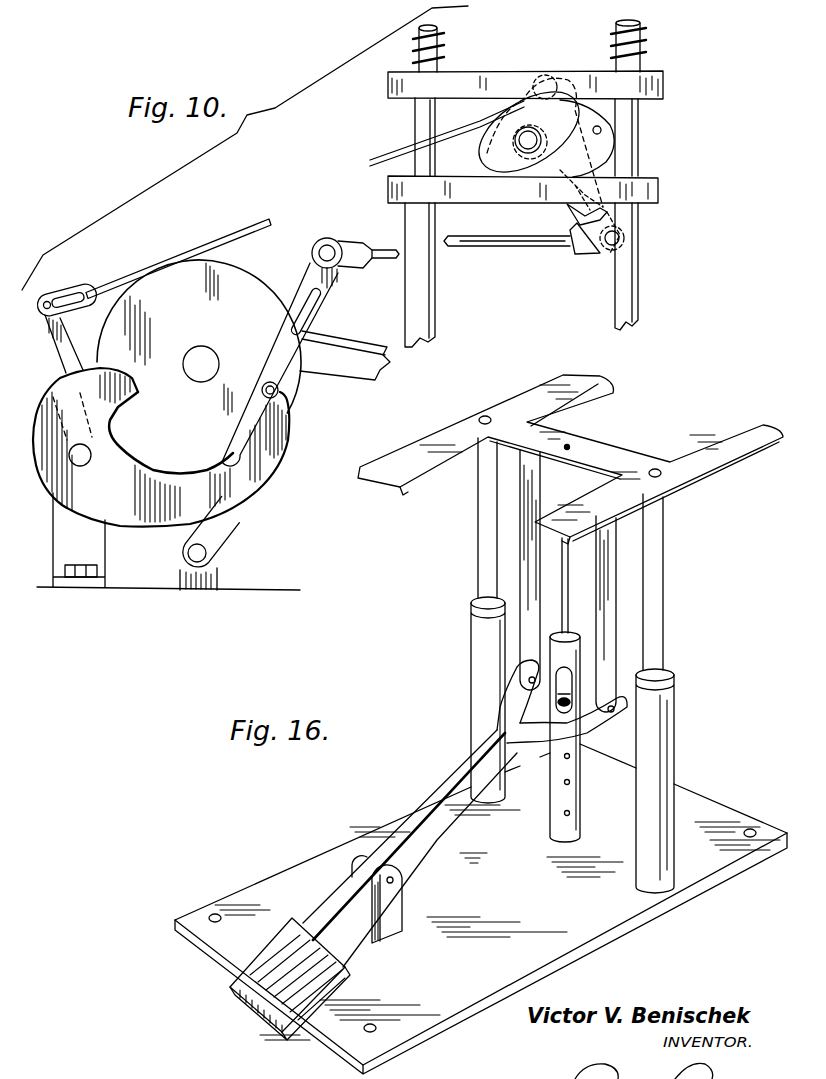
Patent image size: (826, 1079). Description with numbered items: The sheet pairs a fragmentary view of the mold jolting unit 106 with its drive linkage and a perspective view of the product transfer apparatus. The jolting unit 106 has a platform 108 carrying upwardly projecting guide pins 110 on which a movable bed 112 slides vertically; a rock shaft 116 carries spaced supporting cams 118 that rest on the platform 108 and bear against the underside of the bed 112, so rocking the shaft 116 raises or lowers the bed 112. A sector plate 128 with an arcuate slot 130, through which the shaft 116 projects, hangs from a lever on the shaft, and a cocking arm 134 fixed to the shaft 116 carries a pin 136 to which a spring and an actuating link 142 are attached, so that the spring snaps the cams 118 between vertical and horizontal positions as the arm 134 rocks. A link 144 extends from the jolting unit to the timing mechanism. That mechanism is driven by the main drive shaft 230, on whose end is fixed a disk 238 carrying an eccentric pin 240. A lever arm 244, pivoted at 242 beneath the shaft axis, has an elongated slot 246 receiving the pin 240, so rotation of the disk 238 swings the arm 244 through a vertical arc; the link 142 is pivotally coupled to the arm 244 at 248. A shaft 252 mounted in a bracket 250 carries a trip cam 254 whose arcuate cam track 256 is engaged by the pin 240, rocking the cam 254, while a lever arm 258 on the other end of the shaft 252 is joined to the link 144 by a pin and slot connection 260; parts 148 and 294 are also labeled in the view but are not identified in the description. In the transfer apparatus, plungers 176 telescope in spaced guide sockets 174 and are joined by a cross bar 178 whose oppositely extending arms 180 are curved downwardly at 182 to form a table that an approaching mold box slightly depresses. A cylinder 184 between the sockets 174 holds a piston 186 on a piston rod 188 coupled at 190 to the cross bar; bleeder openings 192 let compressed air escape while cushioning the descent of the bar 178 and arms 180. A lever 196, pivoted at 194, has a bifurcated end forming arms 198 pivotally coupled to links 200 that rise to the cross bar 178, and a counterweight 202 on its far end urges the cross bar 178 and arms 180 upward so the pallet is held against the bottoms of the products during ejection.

In FIG. 10, the mold jolting unit 106 is at (531, 183).
In FIG. 10, the platform 108 is at (659, 196).
In FIG. 10, the guide pins 110 is at (415, 118).
In FIG. 10, the movable bed 112 is at (664, 85).
In FIG. 10, the rock shaft 116 is at (515, 144).
In FIG. 10, the supporting cams 118 is at (555, 190).
In FIG. 10, the sector plate 128 is at (616, 146).
In FIG. 10, the arcuate slot 130 is at (597, 122).
In FIG. 10, the cocking arm 134 is at (568, 209).
In FIG. 10, the pin 136 is at (600, 257).
In FIG. 10, the actuating link 142 is at (487, 247).
In FIG. 10, the link 144 is at (397, 159).
In FIG. 10, the compression springs 148 is at (441, 62).
In FIG. 10, the main drive shaft 230 is at (203, 348).
In FIG. 10, the disk 238 is at (242, 287).
In FIG. 10, the eccentrically located pin 240 is at (292, 394).
In FIG. 10, the pivot 242 is at (208, 553).
In FIG. 10, the lever arm 244 is at (234, 516).
In FIG. 10, the elongated longitudinal slot 246 is at (280, 348).
In FIG. 10, the pivotal coupling 248 is at (330, 238).
In FIG. 10, the bracket 250 is at (62, 530).
In FIG. 10, the shaft 252 is at (80, 467).
In FIG. 10, the trip cam 254 is at (173, 482).
In FIG. 10, the arcuate cam track 256 is at (138, 448).
In FIG. 10, the lever arm 258 is at (58, 364).
In FIG. 10, the pin and slot connection 260 is at (49, 294).
In FIG. 10, the arm 294 is at (372, 374).
In FIG. 16, the guide sockets 174 is at (478, 664).
In FIG. 16, the plungers 176 is at (482, 510).
In FIG. 16, the cross bar 178 is at (598, 450).
In FIG. 16, the arms 180 is at (405, 453).
In FIG. 16, the downwardly curved ends 182 is at (610, 393).
In FIG. 16, the cylinder 184 is at (560, 781).
In FIG. 16, the piston 186 is at (578, 693).
In FIG. 16, the piston rod 188 is at (569, 605).
In FIG. 16, the coupling 190 is at (567, 444).
In FIG. 16, the bleeder openings 192 is at (571, 813).
In FIG. 16, the pivot 194 is at (394, 882).
In FIG. 16, the lever 196 is at (430, 802).
In FIG. 16, the spaced arms 198 is at (622, 713).
In FIG. 16, the links 200 is at (530, 570).
In FIG. 16, the counterweight 202 is at (329, 977).